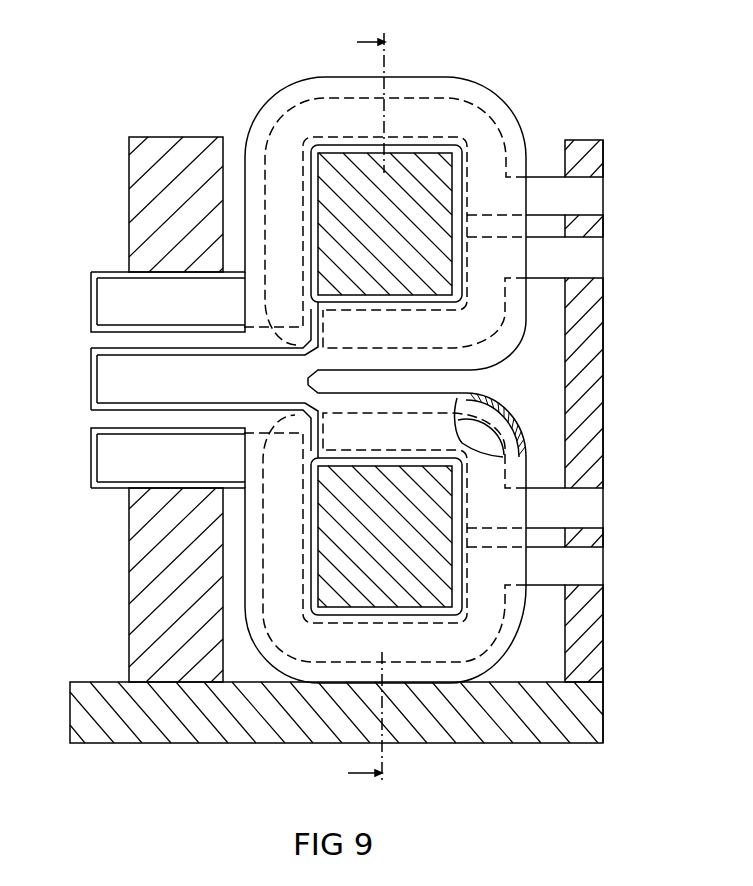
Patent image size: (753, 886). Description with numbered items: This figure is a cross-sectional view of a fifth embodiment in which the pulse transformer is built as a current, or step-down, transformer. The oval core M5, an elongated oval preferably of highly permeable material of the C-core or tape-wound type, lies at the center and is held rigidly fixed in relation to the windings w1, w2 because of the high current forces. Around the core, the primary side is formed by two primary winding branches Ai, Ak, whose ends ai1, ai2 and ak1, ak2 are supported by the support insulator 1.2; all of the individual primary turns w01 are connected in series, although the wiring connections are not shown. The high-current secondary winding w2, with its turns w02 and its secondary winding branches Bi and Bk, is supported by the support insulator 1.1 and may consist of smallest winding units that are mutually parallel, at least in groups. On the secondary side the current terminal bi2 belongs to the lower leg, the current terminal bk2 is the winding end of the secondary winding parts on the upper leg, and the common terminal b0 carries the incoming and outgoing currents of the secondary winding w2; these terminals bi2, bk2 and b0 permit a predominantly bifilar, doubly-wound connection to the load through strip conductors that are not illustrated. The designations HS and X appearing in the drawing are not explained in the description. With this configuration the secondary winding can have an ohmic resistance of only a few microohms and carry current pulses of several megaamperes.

The support insulator 1.1 is at (129, 163).
The support insulator 1.2 is at (603, 158).
The secondary winding branch Bk is at (243, 127).
The secondary winding branch Bi is at (236, 615).
The oval core M5 is at (386, 380).
The high-current secondary winding w2 is at (306, 383).
The secondary winding turns w02 is at (394, 383).
The primary turns w01 is at (487, 131).
The primary winding w1 is at (477, 431).
The primary winding branch Ak is at (590, 227).
The primary winding branch end ak1 is at (603, 203).
The primary winding branch end ak2 is at (603, 258).
The primary winding branch Ai is at (587, 552).
The primary winding branch end ai1 is at (603, 508).
The primary winding branch end ai2 is at (603, 563).
The main section HS is at (646, 360).
The current terminal bk2 is at (90, 300).
The common terminal b0 is at (91, 380).
The current terminal bi2 is at (90, 460).
The section line X- X is at (366, 409).